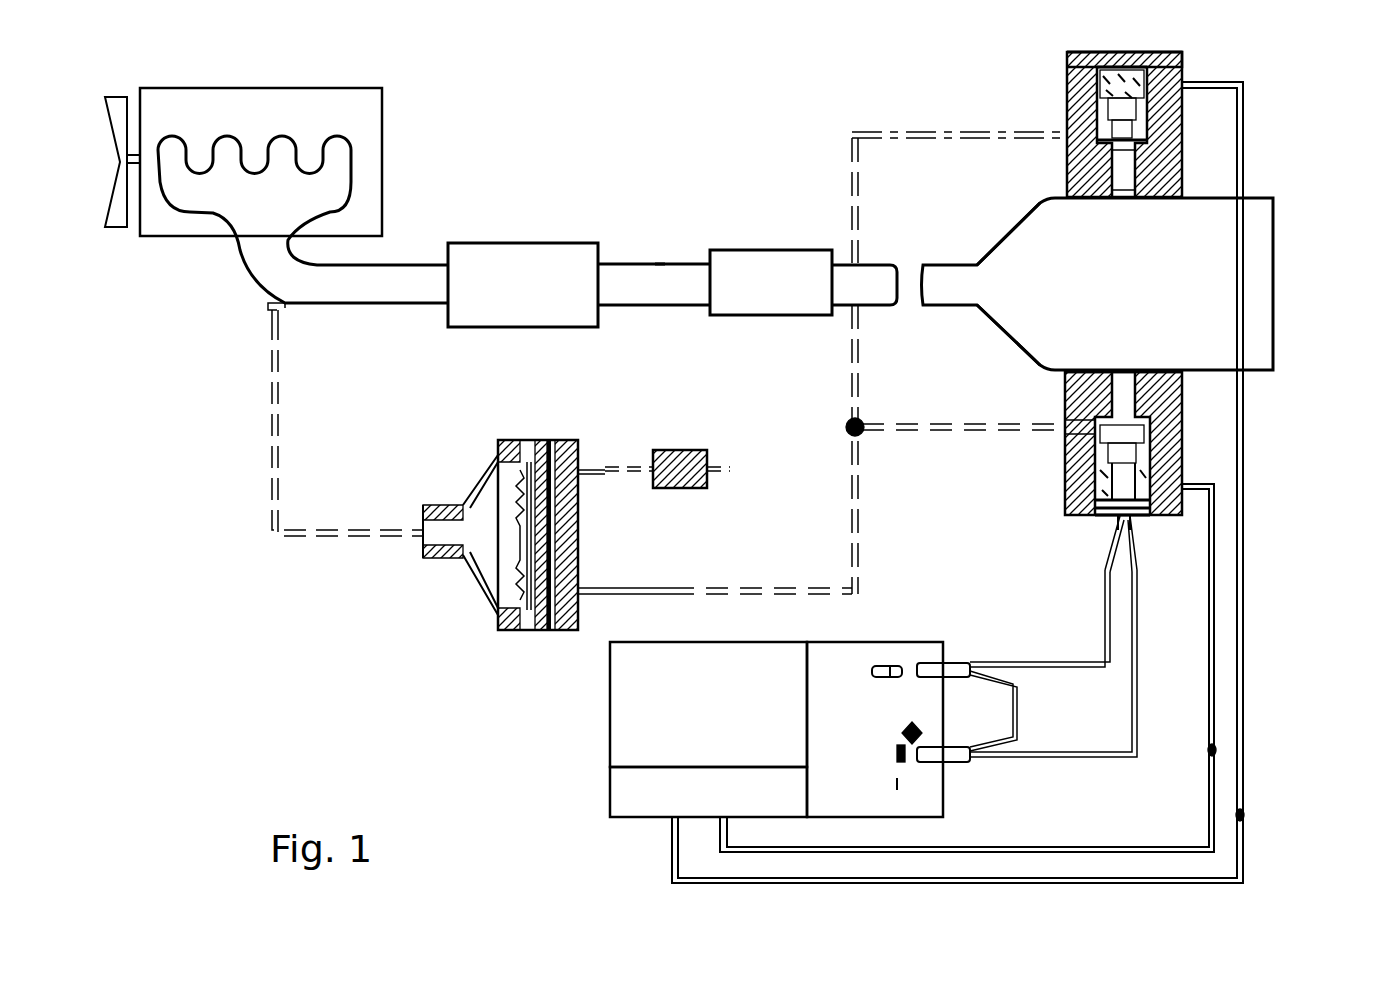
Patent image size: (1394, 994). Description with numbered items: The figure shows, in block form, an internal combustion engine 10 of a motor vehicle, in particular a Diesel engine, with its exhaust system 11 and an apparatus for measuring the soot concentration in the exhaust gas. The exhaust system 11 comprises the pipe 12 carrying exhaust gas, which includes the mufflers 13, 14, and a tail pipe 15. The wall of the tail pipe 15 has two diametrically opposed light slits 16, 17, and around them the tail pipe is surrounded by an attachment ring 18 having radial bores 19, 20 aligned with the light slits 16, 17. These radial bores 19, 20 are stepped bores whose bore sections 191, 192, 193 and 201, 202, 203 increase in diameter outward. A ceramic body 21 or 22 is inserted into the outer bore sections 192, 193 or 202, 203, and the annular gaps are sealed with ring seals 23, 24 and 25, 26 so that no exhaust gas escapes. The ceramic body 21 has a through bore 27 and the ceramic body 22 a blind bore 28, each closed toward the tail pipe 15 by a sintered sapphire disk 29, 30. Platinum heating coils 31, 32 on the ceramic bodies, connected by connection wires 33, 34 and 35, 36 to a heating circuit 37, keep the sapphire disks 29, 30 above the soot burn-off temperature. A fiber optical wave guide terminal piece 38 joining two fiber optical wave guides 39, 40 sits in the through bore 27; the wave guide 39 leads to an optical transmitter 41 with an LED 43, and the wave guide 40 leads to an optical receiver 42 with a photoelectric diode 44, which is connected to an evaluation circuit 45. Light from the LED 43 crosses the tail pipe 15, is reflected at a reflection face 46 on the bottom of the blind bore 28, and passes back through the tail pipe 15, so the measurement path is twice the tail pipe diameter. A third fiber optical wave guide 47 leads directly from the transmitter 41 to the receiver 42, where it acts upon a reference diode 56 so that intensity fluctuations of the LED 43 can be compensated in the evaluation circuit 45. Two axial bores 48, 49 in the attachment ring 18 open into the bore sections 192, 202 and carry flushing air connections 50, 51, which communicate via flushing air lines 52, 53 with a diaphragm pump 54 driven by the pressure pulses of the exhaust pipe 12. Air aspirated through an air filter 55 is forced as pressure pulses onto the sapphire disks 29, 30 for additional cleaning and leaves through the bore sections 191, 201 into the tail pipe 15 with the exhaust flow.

The internal combustion engine 10 is at (365, 180).
The exhaust system 11 is at (657, 250).
The pipe 12 is at (398, 277).
The muffler 13 is at (520, 265).
The muffler 14 is at (742, 278).
The tail pipe 15 is at (1080, 198).
The light slit 16 is at (1182, 380).
The light slit 17 is at (1125, 198).
The attachment ring 18 is at (1135, 372).
The radial bore 19 is at (1182, 430).
The radial bore 20 is at (1242, 293).
The ceramic body 21 is at (1182, 500).
The ceramic body 22 is at (1182, 78).
The ring seal 23 is at (1067, 475).
The ring seal 24 is at (1150, 515).
The ring seal 25 is at (1182, 110).
The ring seal 26 is at (1182, 65).
The through bore 27 is at (1182, 488).
The blind bore 28 is at (1182, 165).
The sapphire disk 29 is at (1182, 455).
The sapphire disk 30 is at (940, 155).
The platinum heating coil 31 is at (1182, 470).
The platinum heating coil 32 is at (1190, 204).
The connection wire 33 is at (1214, 750).
The connection wire 34 is at (1214, 735).
The connection wire 35 is at (1243, 815).
The connection wire 36 is at (1243, 790).
The heating circuit 37 is at (624, 803).
The fiber optical wave guide terminal piece 38 is at (1135, 540).
The fiber optical wave guide 39 is at (1107, 600).
The fiber optical wave guide 40 is at (1137, 640).
The optical transmitter 41 is at (876, 632).
The optical receiver 42 is at (900, 790).
The LED 43 is at (882, 663).
The photoelectric diode 44 is at (905, 763).
The evaluation circuit 45 is at (624, 698).
The reflection face 46 is at (1182, 128).
The fiber optical wave guide 47 is at (1243, 852).
The axial bore 48 is at (1065, 418).
The axial bore 49 is at (1065, 108).
The flushing air connection 50 is at (1065, 428).
The flushing air connection 51 is at (1065, 125).
The flushing air line 52 is at (851, 150).
The flushing air line 53 is at (853, 425).
The diaphragm pump 54 is at (493, 542).
The air filter 55 is at (678, 450).
The reference diode 56 is at (915, 725).
The bore section 191 is at (1182, 405).
The bore section 192 is at (1067, 455).
The bore section 193 is at (1182, 515).
The bore section 201 is at (893, 135).
The bore section 202 is at (1182, 145).
The bore section 203 is at (1065, 86).